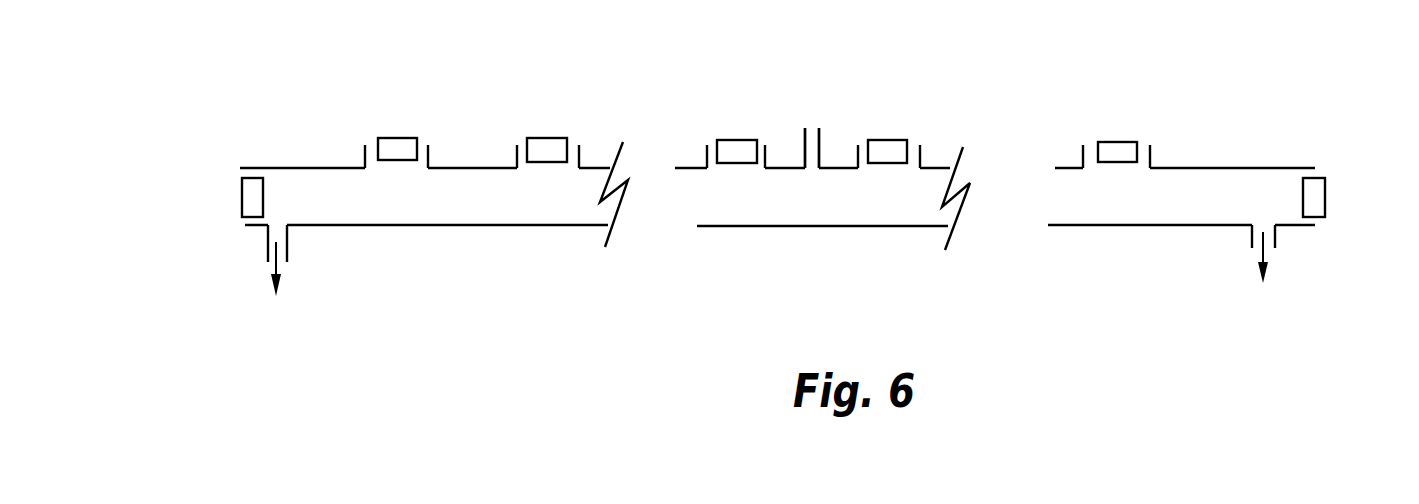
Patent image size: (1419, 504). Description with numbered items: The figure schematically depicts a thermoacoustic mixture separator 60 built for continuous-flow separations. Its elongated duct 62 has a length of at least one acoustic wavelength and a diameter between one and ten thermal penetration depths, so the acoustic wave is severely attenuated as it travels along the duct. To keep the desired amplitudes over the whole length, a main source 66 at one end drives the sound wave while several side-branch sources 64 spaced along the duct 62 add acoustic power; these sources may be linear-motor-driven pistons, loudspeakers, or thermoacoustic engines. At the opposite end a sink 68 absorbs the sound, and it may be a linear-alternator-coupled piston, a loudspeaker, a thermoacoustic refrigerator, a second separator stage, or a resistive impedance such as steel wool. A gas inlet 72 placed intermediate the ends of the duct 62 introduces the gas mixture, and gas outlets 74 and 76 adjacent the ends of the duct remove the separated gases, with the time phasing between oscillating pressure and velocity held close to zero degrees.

The thermoacoustic mixture separator 60 is at (816, 234).
The duct 62 is at (735, 229).
The side-branch sources 64 is at (408, 138).
The main source 66 is at (242, 194).
The sink 68 is at (1325, 187).
The gas inlet 72 is at (812, 120).
The gas outlet 74 is at (270, 285).
The gas outlet 76 is at (1245, 276).